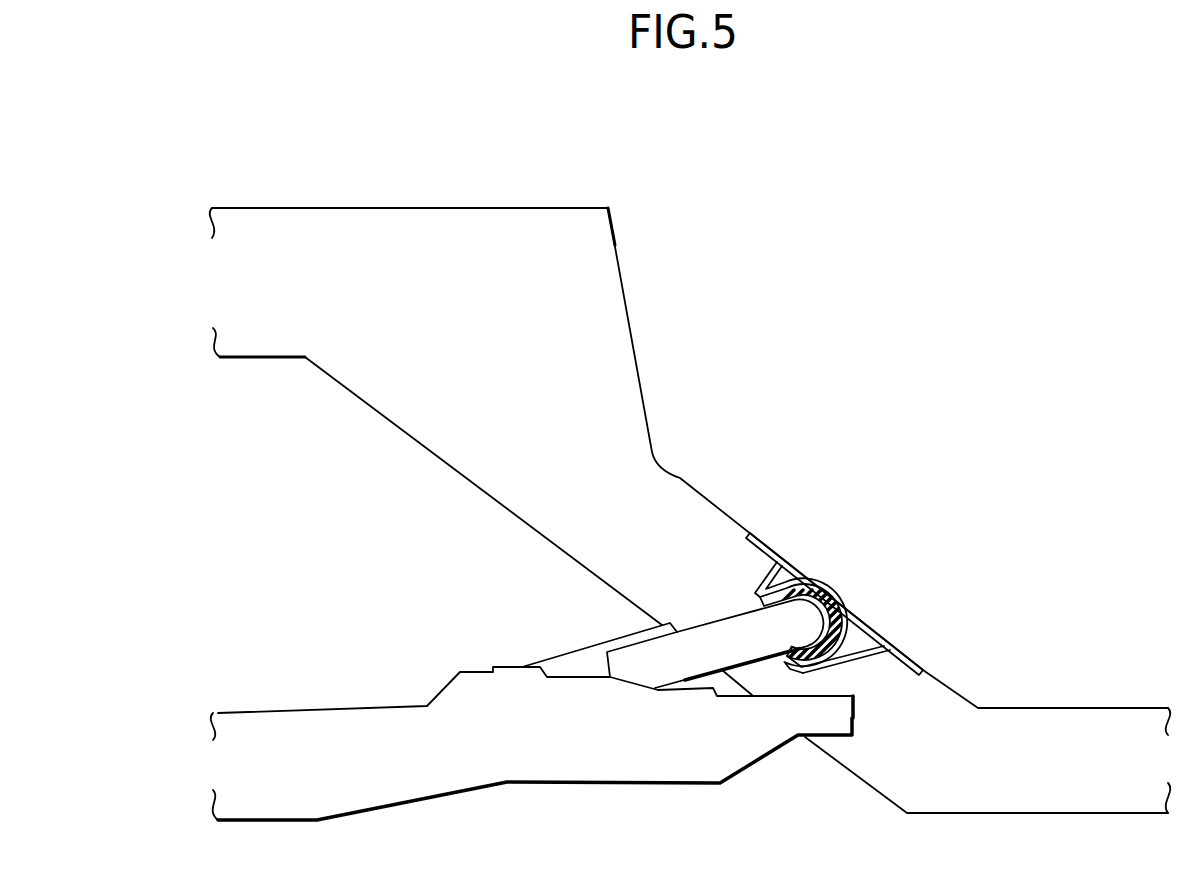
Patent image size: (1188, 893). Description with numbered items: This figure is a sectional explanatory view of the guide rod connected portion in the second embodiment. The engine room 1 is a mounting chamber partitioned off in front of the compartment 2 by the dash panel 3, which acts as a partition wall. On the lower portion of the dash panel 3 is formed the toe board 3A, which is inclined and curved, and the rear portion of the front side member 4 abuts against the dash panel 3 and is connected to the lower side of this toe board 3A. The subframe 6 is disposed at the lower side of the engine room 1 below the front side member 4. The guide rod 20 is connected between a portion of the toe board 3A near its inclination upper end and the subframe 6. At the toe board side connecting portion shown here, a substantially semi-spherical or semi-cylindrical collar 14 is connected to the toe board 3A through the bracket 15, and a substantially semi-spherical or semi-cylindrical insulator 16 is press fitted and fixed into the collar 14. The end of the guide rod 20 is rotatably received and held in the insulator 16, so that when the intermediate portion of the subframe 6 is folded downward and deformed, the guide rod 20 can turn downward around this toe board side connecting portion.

The engine room 1 is at (520, 574).
The compartment 2 is at (690, 489).
The dash panel 3 is at (609, 165).
The toe board 3A is at (942, 680).
The front side member 4 is at (262, 365).
The subframe 6 is at (288, 708).
The collar 14 is at (847, 630).
The bracket 15 is at (860, 660).
The insulator 16 is at (798, 572).
The guide rod 20 is at (727, 607).